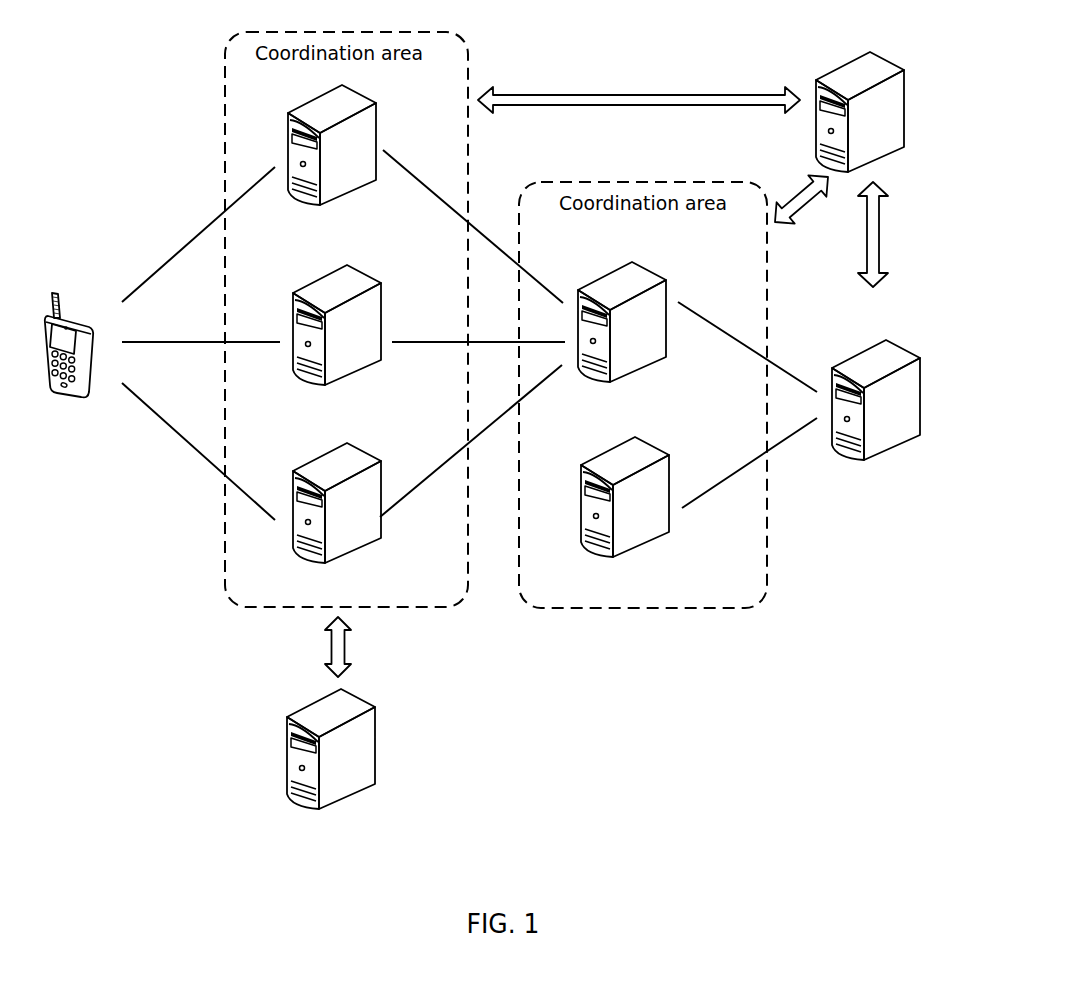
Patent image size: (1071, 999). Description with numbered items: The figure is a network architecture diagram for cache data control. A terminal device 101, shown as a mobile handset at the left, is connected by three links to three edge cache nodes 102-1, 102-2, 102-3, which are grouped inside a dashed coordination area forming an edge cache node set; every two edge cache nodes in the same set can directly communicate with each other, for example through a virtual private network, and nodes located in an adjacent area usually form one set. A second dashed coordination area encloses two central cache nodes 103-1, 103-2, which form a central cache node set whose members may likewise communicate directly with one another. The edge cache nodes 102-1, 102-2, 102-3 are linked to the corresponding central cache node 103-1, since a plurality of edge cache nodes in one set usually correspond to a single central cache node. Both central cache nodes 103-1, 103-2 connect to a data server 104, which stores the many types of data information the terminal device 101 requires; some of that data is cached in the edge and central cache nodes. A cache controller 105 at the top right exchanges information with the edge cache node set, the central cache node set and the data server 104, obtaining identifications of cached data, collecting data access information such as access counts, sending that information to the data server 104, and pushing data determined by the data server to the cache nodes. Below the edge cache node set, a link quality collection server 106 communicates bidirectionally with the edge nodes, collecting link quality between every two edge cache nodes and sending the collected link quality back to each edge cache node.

The terminal device 101 is at (65, 312).
The edge cache node 102-1 is at (376, 128).
The edge cache node 102-2 is at (380, 307).
The edge cache node 102-3 is at (380, 485).
The central cache node 103-1 is at (667, 292).
The central cache node 103-2 is at (669, 490).
The data server 104 is at (904, 343).
The cache controller 105 is at (903, 125).
The link quality collection server 106 is at (374, 762).